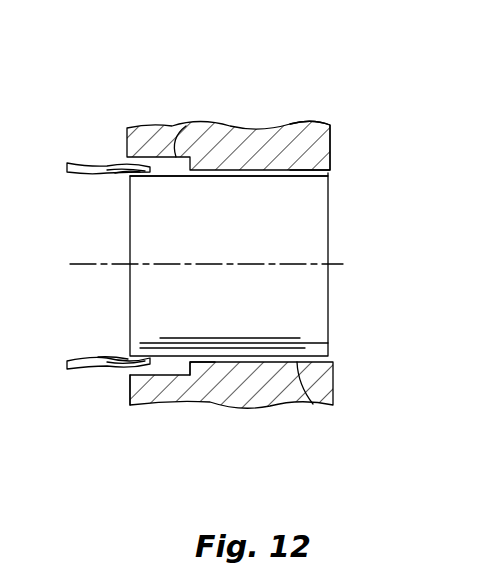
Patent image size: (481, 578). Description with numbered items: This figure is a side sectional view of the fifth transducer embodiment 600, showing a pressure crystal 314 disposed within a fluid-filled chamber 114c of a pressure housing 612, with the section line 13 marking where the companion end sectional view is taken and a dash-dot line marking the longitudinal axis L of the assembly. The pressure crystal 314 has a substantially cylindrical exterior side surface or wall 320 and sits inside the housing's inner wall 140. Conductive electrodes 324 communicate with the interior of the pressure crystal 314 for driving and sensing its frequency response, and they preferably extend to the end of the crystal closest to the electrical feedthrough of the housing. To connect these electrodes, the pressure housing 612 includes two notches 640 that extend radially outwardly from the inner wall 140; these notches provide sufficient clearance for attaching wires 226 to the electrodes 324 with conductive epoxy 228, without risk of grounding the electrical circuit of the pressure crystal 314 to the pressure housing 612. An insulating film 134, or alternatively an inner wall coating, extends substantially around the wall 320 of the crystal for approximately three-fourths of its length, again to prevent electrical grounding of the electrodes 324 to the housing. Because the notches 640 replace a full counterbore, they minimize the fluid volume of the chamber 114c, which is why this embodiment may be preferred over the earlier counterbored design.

The section line 13— 13 is at (190, 103).
The fifth transducer embodiment 600 is at (352, 287).
The longitudinal axis L is at (70, 267).
The pressure crystal 314 is at (330, 225).
The conductive electrodes 324 is at (238, 135).
The pressure housing 612 is at (277, 133).
The inner wall 140 is at (186, 126).
The insulating film 134 is at (332, 170).
The exterior side surface or wall 320 is at (307, 405).
The fluid-filled chamber 114c is at (188, 366).
The notches 640 is at (146, 407).
The conductive epoxy 228 is at (130, 163).
The wires 226 is at (115, 173).